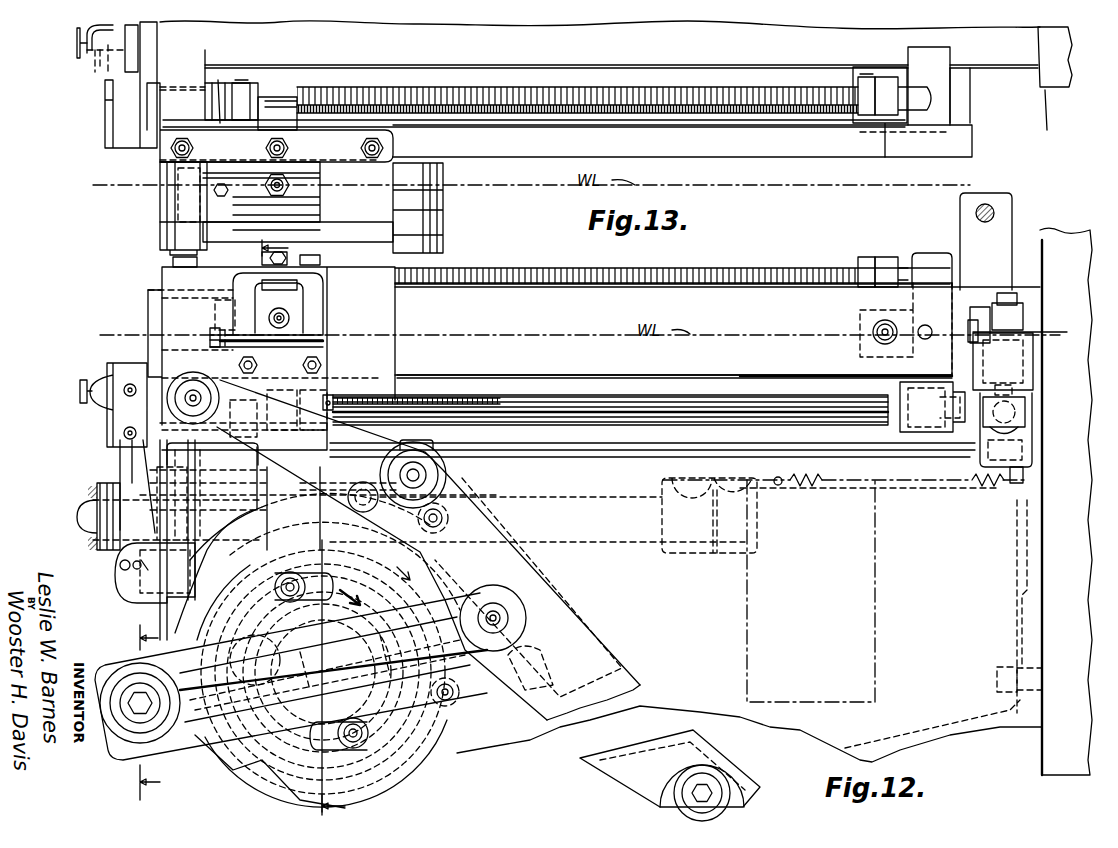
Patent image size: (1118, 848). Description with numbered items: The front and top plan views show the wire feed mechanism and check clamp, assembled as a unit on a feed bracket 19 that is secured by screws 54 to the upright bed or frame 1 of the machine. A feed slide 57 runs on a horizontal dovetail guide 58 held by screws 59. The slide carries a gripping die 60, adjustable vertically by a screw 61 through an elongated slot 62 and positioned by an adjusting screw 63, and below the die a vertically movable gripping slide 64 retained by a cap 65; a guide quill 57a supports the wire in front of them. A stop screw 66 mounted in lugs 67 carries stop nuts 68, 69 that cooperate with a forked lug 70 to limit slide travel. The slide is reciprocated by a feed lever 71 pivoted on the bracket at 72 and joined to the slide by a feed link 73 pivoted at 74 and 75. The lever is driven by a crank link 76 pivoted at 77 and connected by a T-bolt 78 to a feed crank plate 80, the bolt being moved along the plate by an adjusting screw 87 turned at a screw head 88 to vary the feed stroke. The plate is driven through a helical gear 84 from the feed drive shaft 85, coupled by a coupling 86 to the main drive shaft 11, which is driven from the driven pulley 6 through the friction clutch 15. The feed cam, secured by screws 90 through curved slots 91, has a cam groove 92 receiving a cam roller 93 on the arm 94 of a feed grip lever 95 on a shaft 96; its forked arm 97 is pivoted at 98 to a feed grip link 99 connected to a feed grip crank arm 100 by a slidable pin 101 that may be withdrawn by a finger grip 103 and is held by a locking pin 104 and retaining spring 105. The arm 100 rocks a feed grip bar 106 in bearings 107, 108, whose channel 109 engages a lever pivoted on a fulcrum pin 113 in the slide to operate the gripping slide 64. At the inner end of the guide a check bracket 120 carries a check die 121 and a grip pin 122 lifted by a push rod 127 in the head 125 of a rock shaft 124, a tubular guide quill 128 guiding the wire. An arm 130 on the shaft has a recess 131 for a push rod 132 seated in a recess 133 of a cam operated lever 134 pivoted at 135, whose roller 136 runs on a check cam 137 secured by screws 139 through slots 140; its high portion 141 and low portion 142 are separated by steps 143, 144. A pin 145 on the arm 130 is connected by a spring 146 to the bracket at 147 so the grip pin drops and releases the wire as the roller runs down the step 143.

In FIG. 13, the upright bed or frame 1 is at (1055, 78).
In FIG. 12, the upright bed or frame 1 is at (1057, 738).
In FIG. 12, the grooved driven pulley 6 is at (878, 611).
In FIG. 12, the main drive shaft 11 is at (786, 543).
In FIG. 12, the friction clutch 15 is at (253, 528).
In FIG. 13, the feed bracket 19 is at (713, 40).
In FIG. 12, the feed bracket 19 is at (948, 750).
In FIG. 12, the screws 54 is at (990, 678).
In FIG. 13, the feed slide 57 is at (345, 172).
In FIG. 12, the feed slide 57 is at (395, 356).
In FIG. 12, the guide quill 57a is at (213, 334).
In FIG. 13, the dovetail guide 58 is at (528, 150).
In FIG. 12, the dovetail guide 58 is at (637, 300).
In FIG. 12, the screws 59 is at (873, 332).
In FIG. 12, the gripping die 60 is at (290, 312).
In FIG. 12, the screw 61 is at (289, 323).
In FIG. 12, the vertical elongated slot 62 is at (270, 310).
In FIG. 13, the adjusting screw 63 is at (283, 174).
In FIG. 12, the adjusting screw 63 is at (254, 276).
In FIG. 12, the gripping slide 64 is at (312, 358).
In FIG. 12, the cap 65 is at (316, 370).
In FIG. 13, the stop screw 66 is at (503, 94).
In FIG. 12, the stop screw 66 is at (543, 272).
In FIG. 13, the lugs 67 is at (205, 65).
In FIG. 12, the lugs 67 is at (931, 258).
In FIG. 13, the stop nut 68 is at (262, 98).
In FIG. 12, the stop nut 68 is at (866, 272).
In FIG. 13, the stop nut 69 is at (232, 85).
In FIG. 12, the stop nut 69 is at (891, 272).
In FIG. 13, the forked lug 70 is at (275, 103).
In FIG. 12, the feed lever 71 is at (608, 645).
In FIG. 12, the pivot 72 is at (745, 797).
In FIG. 13, the feed link 73 is at (298, 234).
In FIG. 12, the feed link 73 is at (428, 550).
In FIG. 12, the pivot 74 is at (440, 475).
In FIG. 13, the pivot 75 is at (160, 227).
In FIG. 12, the pivot 75 is at (194, 380).
In FIG. 12, the crank link 76 is at (458, 655).
In FIG. 12, the pivot 77 is at (508, 632).
In FIG. 12, the T-bolt 78 is at (133, 712).
In FIG. 12, the feed crank plate 80 is at (238, 778).
In FIG. 12, the helical gear 84 is at (300, 485).
In FIG. 12, the feed drive shaft 85 is at (585, 497).
In FIG. 12, the coupling 86 is at (660, 492).
In FIG. 12, the adjusting screw 87 is at (300, 652).
In FIG. 12, the screw head 88 is at (417, 593).
In FIG. 12, the screws 90 is at (290, 600).
In FIG. 12, the elongated curved slots 91 is at (312, 588).
In FIG. 12, the cam groove 92 is at (295, 762).
In FIG. 12, the cam roller 93 is at (185, 667).
In FIG. 12, the arm 94 is at (172, 627).
In FIG. 12, the feed grip lever 95 is at (216, 547).
In FIG. 12, the shaft 96 is at (247, 553).
In FIG. 12, the forked arm 97 is at (137, 585).
In FIG. 12, the pivot 98 is at (120, 566).
In FIG. 13, the feed grip link 99 is at (128, 72).
In FIG. 12, the feed grip link 99 is at (130, 480).
In FIG. 13, the feed grip crank arm 100 is at (117, 128).
In FIG. 12, the feed grip crank arm 100 is at (110, 410).
In FIG. 13, the slidable pin 101 is at (85, 58).
In FIG. 13, the finger grip 103 is at (77, 43).
In FIG. 12, the finger grip 103 is at (80, 392).
In FIG. 13, the locking pin 104 is at (108, 55).
In FIG. 13, the retaining spring 105 is at (88, 30).
In FIG. 12, the feed grip bar 106 is at (584, 388).
In FIG. 12, the bearing 107 is at (193, 445).
In FIG. 12, the bearing 108 is at (905, 426).
In FIG. 12, the longitudinal channel 109 is at (502, 400).
In FIG. 12, the fulcrum pin 113 is at (322, 398).
In FIG. 12, the check bracket 120 is at (1023, 358).
In FIG. 12, the check die 121 is at (1016, 313).
In FIG. 12, the grip pin 122 is at (1028, 373).
In FIG. 12, the rock shaft 124 is at (978, 425).
In FIG. 12, the head 125 is at (1018, 412).
In FIG. 12, the push rod 127 is at (1006, 390).
In FIG. 12, the tubular guide quill 128 is at (970, 346).
In FIG. 12, the check arm 130 is at (1032, 453).
In FIG. 12, the recess 131 is at (987, 487).
In FIG. 12, the push rod 132 is at (677, 454).
In FIG. 12, the recess 133 is at (418, 449).
In FIG. 12, the cam operated lever 134 is at (385, 470).
In FIG. 12, the pivot 135 is at (446, 530).
In FIG. 12, the roller 136 is at (349, 499).
In FIG. 12, the check cam 137 is at (428, 768).
In FIG. 12, the screws 139 is at (452, 697).
In FIG. 12, the circular elongated slots 140 is at (476, 735).
In FIG. 12, the high portion 141 is at (407, 786).
In FIG. 12, the low portion 142 is at (318, 662).
In FIG. 12, the step 143 is at (325, 552).
In FIG. 12, the step 144 is at (303, 803).
In FIG. 12, the pin 145 is at (1026, 472).
In FIG. 12, the spring 146 is at (907, 485).
In FIG. 12, the spring anchorage 147 is at (775, 480).